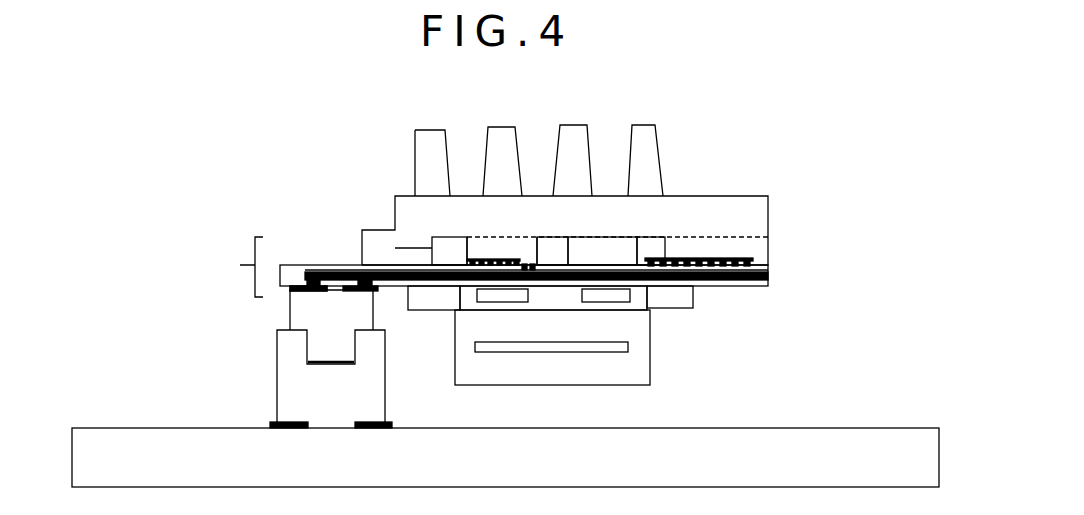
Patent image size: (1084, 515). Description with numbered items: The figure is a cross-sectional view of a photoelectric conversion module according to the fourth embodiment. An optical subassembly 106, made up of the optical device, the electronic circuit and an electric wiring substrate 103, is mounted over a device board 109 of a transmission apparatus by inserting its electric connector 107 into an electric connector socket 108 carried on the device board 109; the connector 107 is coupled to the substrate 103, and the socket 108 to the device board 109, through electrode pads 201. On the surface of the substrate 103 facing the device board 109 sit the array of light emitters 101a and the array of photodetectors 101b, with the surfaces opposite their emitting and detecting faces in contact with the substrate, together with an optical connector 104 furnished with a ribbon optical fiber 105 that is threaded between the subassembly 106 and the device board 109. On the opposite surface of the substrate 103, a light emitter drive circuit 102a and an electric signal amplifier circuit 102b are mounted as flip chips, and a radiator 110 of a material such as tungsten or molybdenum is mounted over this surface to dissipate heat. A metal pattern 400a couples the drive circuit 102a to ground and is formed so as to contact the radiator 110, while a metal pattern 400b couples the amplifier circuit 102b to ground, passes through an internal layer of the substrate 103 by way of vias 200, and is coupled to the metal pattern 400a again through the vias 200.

The radiator 110 is at (432, 196).
The light emitter drive circuit 102a is at (603, 236).
The electric signal amplifier circuit 102b is at (500, 236).
The vias 200 is at (535, 263).
The metal pattern 400a is at (755, 258).
The metal pattern 400b is at (723, 277).
The electric wiring substrate 103 is at (337, 265).
The optical subassembly 106 is at (229, 267).
The electrode pads 201 is at (283, 290).
The electric connector 107 is at (285, 317).
The electric connector socket 108 is at (285, 362).
The array of light emitters 101a is at (630, 295).
The array of photodetectors 101b is at (500, 302).
The optical connector 104 is at (625, 360).
The ribbon optical fiber 105 is at (552, 352).
The device board 109 is at (820, 440).